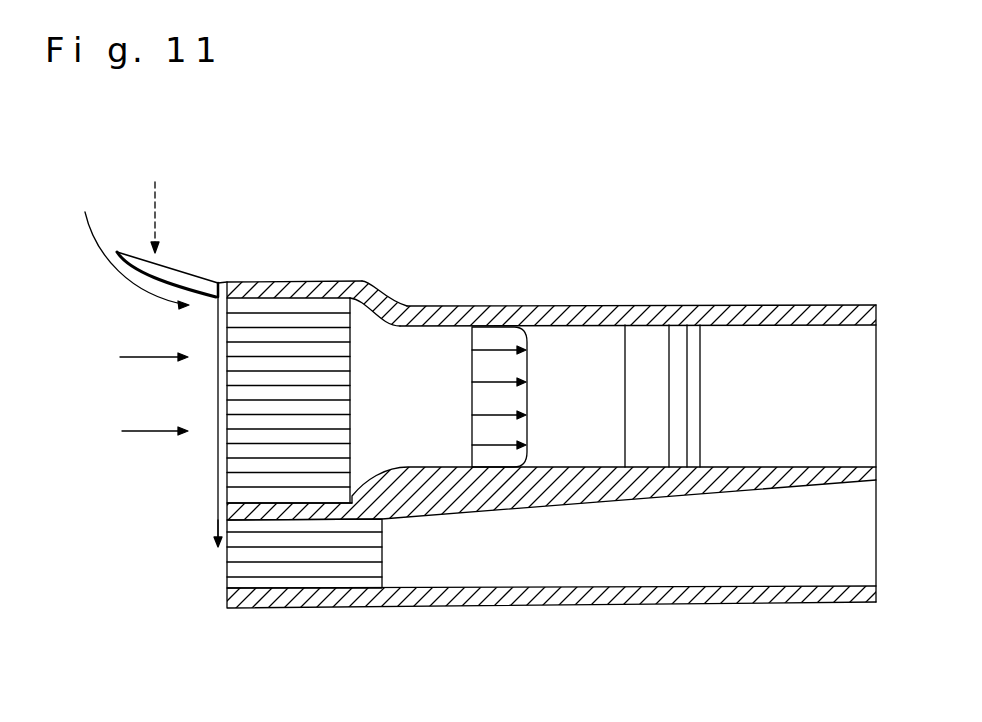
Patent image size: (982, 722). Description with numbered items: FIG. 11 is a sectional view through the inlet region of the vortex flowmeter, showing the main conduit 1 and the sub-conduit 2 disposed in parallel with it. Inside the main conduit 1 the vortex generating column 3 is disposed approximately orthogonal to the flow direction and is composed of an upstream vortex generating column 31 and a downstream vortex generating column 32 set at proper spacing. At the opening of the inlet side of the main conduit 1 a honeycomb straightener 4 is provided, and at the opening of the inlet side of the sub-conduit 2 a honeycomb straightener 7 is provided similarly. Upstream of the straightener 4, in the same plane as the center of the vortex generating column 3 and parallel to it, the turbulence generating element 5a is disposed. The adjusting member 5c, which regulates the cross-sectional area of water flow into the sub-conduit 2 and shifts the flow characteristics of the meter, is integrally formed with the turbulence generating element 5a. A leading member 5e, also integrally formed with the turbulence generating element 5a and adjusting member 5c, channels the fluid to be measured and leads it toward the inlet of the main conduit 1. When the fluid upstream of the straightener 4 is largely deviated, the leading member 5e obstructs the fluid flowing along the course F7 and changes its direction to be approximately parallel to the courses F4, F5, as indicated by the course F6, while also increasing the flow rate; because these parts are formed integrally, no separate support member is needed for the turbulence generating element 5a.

The main conduit 1 is at (505, 320).
The sub-conduit 2 is at (562, 597).
The vortex generating column 3 is at (672, 310).
The upstream vortex generating column 31 is at (642, 332).
The downstream vortex generating column 32 is at (690, 332).
The honeycomb straightener 4 is at (363, 317).
The turbulence generating element 5a is at (218, 355).
The adjusting member 5c is at (218, 543).
The leading member 5e is at (183, 268).
The honeycomb straightener 7 is at (382, 562).
The course F4 is at (140, 432).
The course F5 is at (140, 355).
The course F6 is at (123, 260).
The course F7 is at (171, 217).